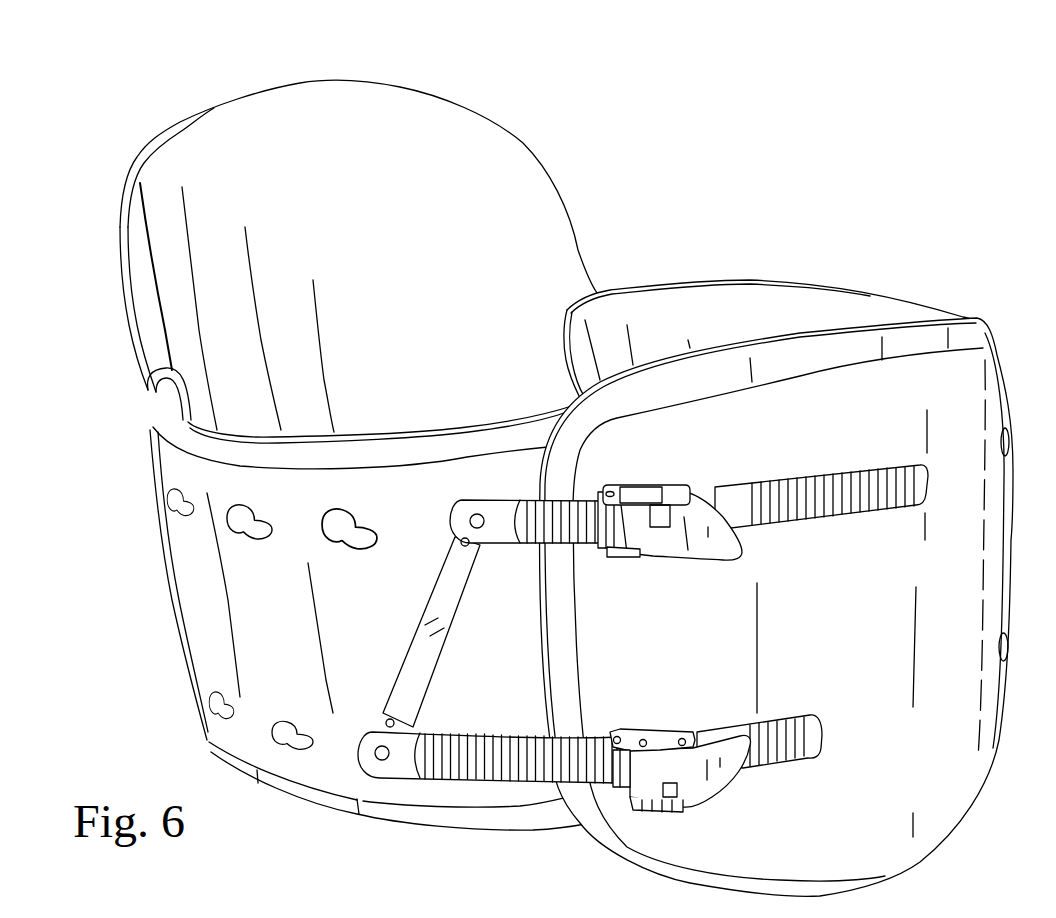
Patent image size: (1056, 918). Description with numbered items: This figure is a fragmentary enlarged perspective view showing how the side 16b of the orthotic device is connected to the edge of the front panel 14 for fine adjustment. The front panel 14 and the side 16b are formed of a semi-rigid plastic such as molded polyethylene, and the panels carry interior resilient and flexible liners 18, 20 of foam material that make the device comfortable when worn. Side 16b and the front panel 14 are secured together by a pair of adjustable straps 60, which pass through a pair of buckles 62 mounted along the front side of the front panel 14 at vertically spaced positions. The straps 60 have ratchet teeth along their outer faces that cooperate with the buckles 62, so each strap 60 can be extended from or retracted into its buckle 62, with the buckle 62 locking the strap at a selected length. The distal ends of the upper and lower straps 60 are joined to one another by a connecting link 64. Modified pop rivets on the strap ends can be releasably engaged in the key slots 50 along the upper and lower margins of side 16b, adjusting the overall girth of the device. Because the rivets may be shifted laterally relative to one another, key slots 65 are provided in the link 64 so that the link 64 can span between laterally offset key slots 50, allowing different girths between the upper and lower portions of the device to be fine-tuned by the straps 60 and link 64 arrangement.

The front panel 14 is at (956, 800).
The side 16b is at (350, 595).
The interior resilient and flexible liner 18 is at (205, 160).
The interior resilient and flexible liner 20 is at (837, 343).
The key slot 50 is at (345, 530).
The adjustable strap 60 is at (557, 533).
The buckle 62 is at (653, 543).
The link 64 is at (447, 602).
The key slot 65 is at (467, 542).